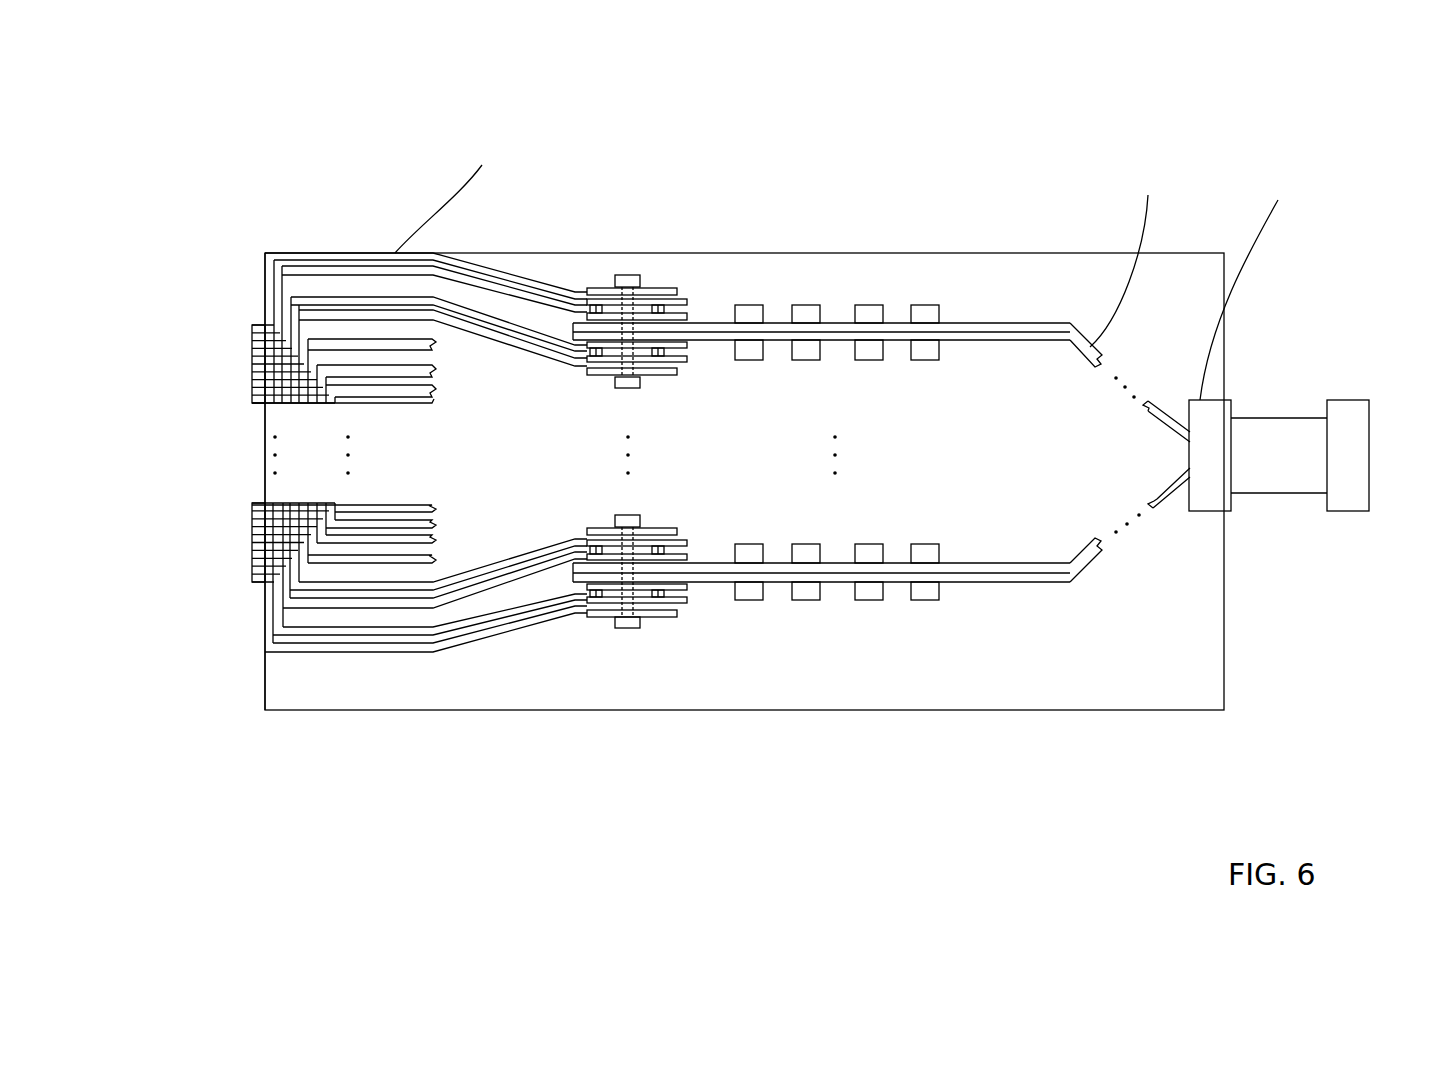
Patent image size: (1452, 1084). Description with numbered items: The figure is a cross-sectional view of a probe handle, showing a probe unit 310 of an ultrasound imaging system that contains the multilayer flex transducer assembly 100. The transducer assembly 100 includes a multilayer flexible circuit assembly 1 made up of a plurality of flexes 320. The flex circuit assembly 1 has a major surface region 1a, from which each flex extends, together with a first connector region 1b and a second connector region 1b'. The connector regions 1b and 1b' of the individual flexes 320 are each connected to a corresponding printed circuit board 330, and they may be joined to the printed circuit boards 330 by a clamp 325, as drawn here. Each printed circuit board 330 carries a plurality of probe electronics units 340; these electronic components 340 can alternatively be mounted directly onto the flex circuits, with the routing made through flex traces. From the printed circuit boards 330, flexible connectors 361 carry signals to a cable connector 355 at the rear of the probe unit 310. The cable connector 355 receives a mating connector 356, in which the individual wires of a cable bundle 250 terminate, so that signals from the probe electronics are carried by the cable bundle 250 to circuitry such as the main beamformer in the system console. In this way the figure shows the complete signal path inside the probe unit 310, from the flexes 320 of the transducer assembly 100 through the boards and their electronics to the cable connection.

The multilayer flexible circuit assembly 1 is at (265, 282).
The major surface region 1a is at (232, 541).
The first connector region 1b is at (460, 857).
The second connector region 1b' is at (444, 132).
The transducer circuit assembly 100 is at (233, 337).
The cable bundle 250 is at (1398, 287).
The probe unit 310 is at (998, 253).
The flexes 320 is at (322, 266).
The clamp 325 is at (628, 258).
The printed circuit boards 330 is at (714, 365).
The probe electronics units 340 is at (931, 305).
The cable connector 355 is at (1283, 500).
The mating connector 356 is at (1338, 555).
The flexible connectors 361 is at (1159, 594).